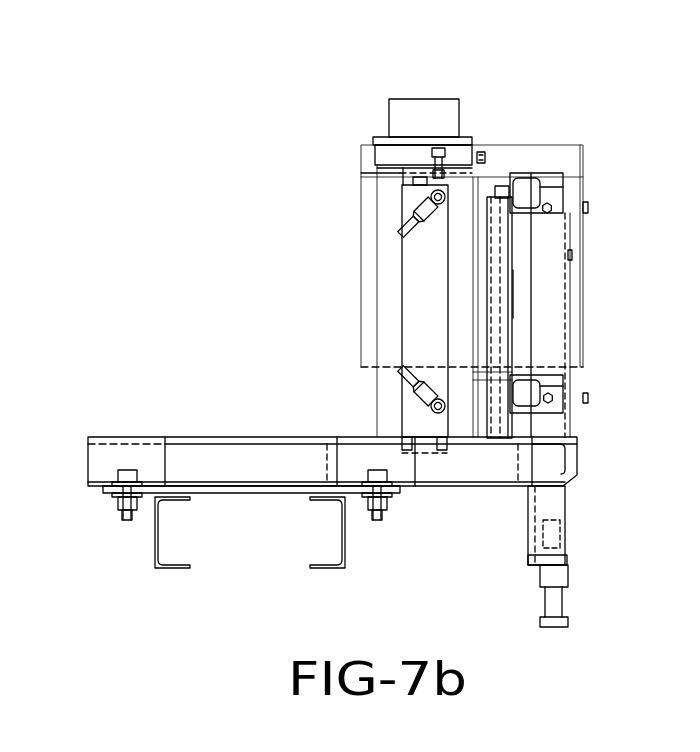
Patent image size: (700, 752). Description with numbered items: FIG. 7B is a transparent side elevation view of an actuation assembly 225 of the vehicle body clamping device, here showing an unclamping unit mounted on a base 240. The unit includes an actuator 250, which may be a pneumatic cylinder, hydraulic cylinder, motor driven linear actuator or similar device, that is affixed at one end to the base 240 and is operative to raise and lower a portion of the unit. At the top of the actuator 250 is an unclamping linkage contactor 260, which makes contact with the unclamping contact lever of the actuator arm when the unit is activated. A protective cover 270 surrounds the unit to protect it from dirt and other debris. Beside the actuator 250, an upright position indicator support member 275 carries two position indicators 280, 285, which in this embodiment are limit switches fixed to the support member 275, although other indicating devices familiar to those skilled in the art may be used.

The linear actuator assembly 225 is at (203, 157).
The common base 240 is at (220, 430).
The actuator 250 is at (417, 276).
The unclamping linkage contactor 260 is at (390, 112).
The protective cover 270 is at (583, 252).
The position indicator support member 275 is at (495, 212).
The position indicator 280 is at (520, 398).
The position indicator 285 is at (525, 187).